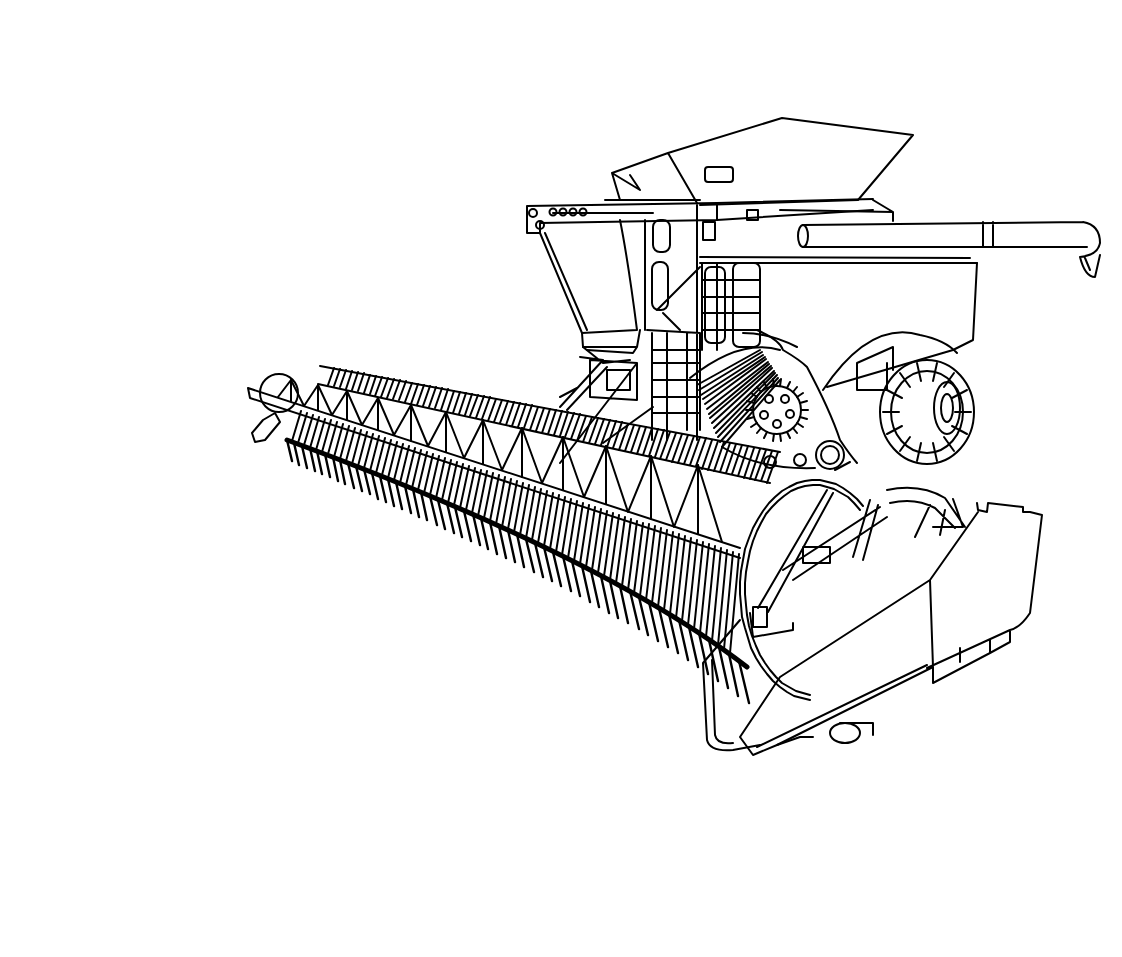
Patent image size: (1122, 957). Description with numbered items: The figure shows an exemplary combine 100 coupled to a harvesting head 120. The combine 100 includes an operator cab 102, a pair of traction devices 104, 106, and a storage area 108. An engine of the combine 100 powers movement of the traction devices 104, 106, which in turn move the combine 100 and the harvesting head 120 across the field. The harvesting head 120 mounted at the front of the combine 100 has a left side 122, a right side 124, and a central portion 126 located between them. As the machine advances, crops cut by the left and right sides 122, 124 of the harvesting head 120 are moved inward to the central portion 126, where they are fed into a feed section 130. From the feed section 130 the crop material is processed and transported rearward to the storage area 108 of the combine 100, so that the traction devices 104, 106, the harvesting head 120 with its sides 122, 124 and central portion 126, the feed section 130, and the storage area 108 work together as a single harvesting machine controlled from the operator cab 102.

The combine 100 is at (485, 148).
The operator cab 102 is at (518, 263).
The traction device 104 is at (852, 460).
The traction device 106 is at (975, 415).
The storage area 108 is at (668, 145).
The harvesting head 120 is at (308, 545).
The left side 122 is at (275, 462).
The right side 124 is at (560, 643).
The central portion 126 is at (428, 547).
The feed section 130 is at (535, 368).